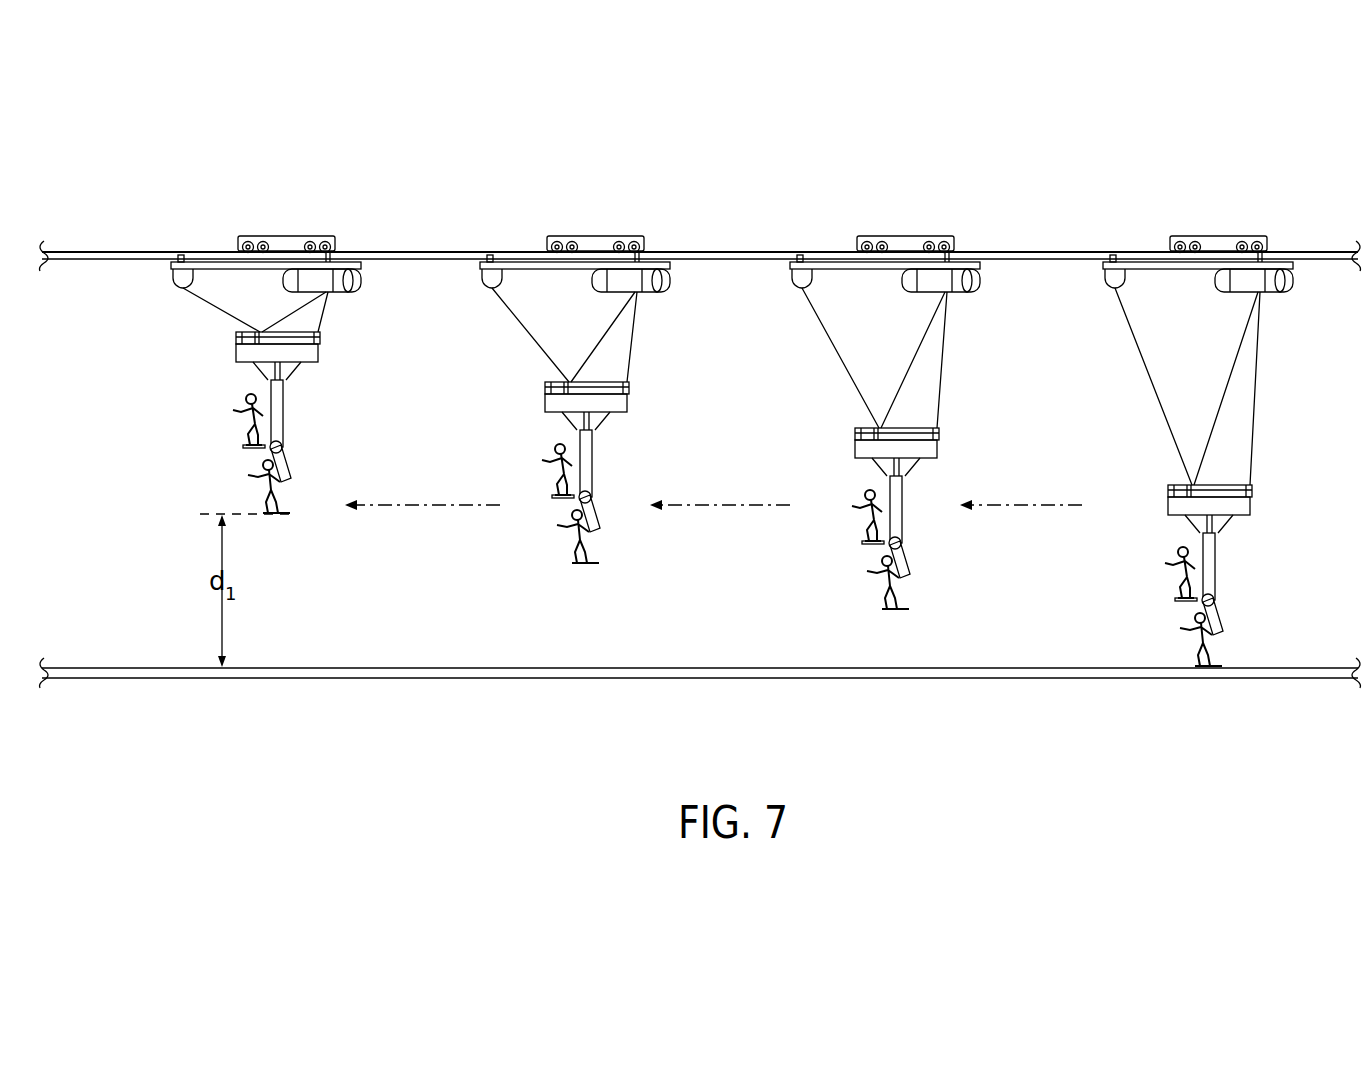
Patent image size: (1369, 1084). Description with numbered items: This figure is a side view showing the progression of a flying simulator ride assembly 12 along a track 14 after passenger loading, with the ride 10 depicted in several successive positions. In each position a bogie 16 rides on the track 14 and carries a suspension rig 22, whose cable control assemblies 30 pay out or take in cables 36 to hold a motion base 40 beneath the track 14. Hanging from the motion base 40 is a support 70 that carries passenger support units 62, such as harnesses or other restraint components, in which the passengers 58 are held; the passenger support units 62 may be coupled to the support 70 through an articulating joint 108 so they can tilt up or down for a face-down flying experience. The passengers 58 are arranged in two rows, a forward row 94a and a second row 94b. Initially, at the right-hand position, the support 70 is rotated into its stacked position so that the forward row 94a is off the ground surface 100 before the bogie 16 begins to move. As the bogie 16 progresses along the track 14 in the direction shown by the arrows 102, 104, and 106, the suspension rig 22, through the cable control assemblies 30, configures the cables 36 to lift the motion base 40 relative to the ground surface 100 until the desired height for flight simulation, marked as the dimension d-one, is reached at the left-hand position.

The ride 10 is at (117, 357).
The flying simulator ride assembly 12 is at (1200, 209).
The track 14 is at (1305, 251).
The bogie 16 is at (1198, 225).
The suspension rig 22 is at (1191, 394).
The cable control assembly 30 is at (1282, 295).
The cables 36 is at (1256, 405).
The motion base 40 is at (1253, 506).
The passengers 58 is at (1176, 559).
The passenger support units 62 is at (872, 548).
The support 70 is at (1219, 610).
The forward row 94a is at (1158, 594).
The rear row 94b is at (1234, 653).
The ground surface 100 is at (1316, 662).
The arrow 102 is at (1040, 508).
The arrow 104 is at (732, 508).
The arrow 106 is at (427, 508).
The articulating joint 108 is at (876, 544).